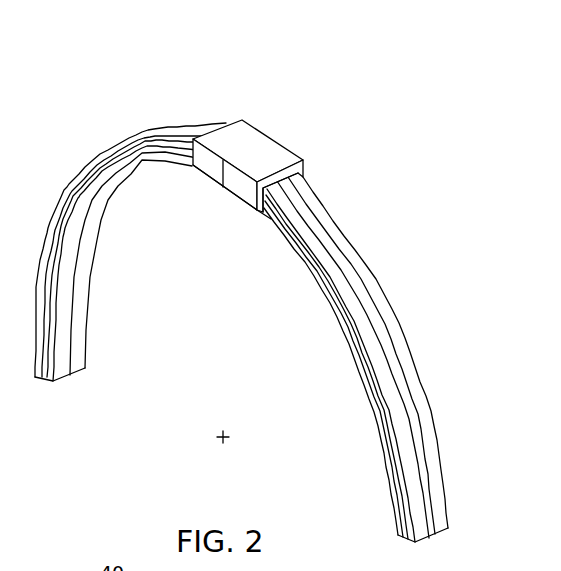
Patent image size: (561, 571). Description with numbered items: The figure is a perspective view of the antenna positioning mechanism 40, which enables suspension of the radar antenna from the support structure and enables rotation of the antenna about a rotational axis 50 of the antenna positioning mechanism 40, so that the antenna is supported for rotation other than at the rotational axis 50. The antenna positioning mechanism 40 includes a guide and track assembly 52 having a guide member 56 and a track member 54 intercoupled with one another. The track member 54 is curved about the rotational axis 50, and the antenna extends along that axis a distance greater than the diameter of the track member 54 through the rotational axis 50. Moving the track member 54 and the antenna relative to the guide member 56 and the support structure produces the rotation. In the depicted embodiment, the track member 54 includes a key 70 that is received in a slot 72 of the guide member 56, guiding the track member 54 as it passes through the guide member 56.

The antenna positioning mechanism 40 is at (341, 100).
The rotational axis 50 is at (232, 437).
The guide and track assembly 52 is at (394, 210).
The track member 54 is at (320, 207).
The guide member 56 is at (282, 147).
The key 70 is at (357, 247).
The slot 72 is at (270, 213).